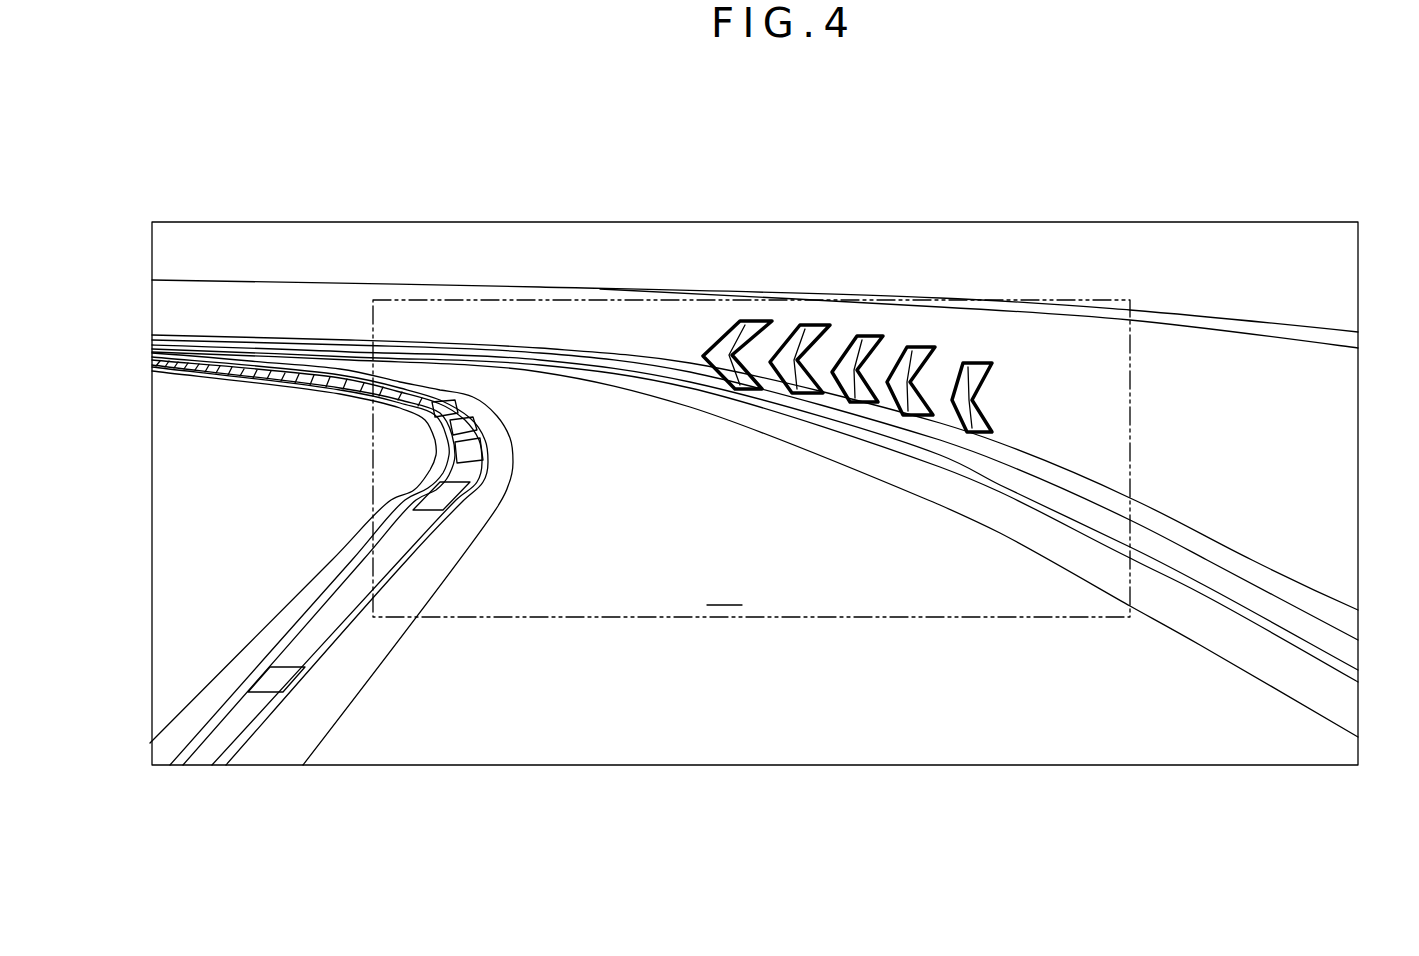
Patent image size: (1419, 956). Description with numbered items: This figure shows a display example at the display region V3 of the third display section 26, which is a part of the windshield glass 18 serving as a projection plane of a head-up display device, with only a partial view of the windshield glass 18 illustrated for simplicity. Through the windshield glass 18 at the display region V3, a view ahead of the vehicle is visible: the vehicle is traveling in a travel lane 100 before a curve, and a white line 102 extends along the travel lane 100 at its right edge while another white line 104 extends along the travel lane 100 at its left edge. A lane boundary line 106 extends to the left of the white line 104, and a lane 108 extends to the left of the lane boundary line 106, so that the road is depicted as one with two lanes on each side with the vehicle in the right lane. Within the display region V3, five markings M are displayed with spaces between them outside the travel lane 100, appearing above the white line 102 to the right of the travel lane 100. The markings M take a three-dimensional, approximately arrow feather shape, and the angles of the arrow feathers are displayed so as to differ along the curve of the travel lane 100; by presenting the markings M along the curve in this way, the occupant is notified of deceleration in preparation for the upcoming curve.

The windshield glass 18 is at (1062, 238).
The third display section 26 is at (455, 300).
The markings M is at (868, 336).
The travel lane 100 is at (1067, 715).
The white line 102 is at (1298, 672).
The white line 104 is at (266, 747).
The lane boundary line 106 is at (203, 750).
The lane 108 is at (183, 640).
The display region V3 is at (724, 593).